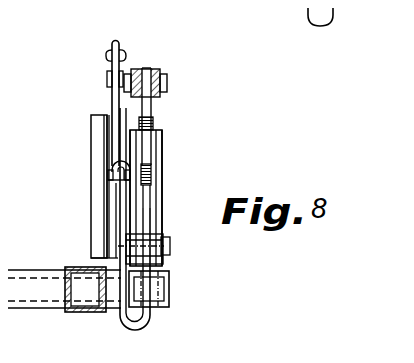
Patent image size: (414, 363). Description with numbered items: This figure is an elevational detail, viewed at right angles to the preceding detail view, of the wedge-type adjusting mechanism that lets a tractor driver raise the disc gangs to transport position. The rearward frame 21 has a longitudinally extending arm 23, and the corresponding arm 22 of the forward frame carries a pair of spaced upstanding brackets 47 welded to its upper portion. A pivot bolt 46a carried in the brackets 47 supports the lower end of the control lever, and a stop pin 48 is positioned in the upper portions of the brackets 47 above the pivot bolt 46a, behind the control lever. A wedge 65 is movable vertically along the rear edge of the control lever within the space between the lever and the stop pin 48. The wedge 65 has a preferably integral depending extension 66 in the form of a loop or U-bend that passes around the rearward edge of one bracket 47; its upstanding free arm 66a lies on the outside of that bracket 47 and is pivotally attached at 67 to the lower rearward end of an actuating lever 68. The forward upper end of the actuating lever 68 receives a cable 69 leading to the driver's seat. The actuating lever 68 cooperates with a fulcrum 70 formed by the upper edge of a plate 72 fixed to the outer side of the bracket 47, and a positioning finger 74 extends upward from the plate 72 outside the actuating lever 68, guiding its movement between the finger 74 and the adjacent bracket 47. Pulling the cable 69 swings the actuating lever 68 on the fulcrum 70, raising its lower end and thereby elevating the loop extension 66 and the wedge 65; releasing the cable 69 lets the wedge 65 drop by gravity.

The rearward frame 21 is at (16, 261).
The arm 22 is at (162, 296).
The arm 23 is at (63, 306).
The pivot bolt 46a is at (162, 239).
The upstanding bracket 47 is at (103, 97).
The stop pin 48 is at (143, 143).
The wedge 65 is at (143, 110).
The depending extension 66 is at (142, 317).
The upstanding free arm 66a is at (110, 213).
The pivotal attachment 67 is at (100, 172).
The actuating lever 68 is at (103, 52).
The cable 69 is at (114, 50).
The fulcrum 70 is at (104, 150).
The plate 72 is at (88, 200).
The positioning finger 74 is at (83, 113).